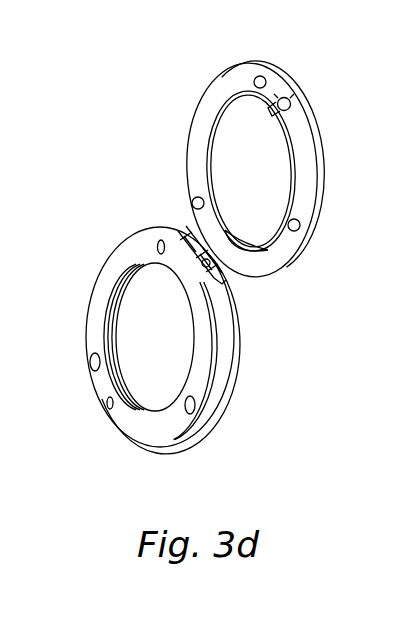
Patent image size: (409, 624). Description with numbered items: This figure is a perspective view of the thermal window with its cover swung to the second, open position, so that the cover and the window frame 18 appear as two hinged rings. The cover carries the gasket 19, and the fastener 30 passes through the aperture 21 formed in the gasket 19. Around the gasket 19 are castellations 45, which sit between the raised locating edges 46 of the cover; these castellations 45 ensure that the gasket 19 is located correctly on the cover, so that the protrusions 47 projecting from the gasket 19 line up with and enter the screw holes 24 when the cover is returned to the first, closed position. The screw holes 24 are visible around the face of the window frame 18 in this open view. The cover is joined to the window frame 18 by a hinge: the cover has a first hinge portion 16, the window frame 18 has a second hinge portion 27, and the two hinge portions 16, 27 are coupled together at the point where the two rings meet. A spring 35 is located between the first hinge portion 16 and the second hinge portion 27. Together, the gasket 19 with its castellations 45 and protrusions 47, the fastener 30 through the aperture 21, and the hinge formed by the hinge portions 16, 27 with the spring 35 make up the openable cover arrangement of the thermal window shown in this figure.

The first hinge portion 16 is at (178, 233).
The window frame 18 is at (163, 430).
The gasket 19 is at (197, 92).
The aperture 21 is at (283, 96).
The screw holes 24 is at (88, 363).
The second hinge portion 27 is at (228, 283).
The fastener 30 is at (294, 105).
The spring 35 is at (186, 260).
The castellations 45 is at (281, 112).
The raised locating edges 46 is at (300, 160).
The protrusions 47 is at (258, 78).